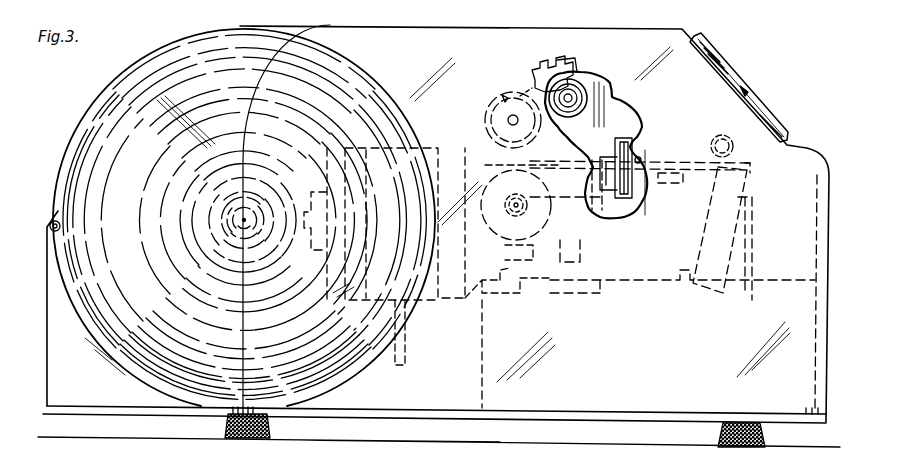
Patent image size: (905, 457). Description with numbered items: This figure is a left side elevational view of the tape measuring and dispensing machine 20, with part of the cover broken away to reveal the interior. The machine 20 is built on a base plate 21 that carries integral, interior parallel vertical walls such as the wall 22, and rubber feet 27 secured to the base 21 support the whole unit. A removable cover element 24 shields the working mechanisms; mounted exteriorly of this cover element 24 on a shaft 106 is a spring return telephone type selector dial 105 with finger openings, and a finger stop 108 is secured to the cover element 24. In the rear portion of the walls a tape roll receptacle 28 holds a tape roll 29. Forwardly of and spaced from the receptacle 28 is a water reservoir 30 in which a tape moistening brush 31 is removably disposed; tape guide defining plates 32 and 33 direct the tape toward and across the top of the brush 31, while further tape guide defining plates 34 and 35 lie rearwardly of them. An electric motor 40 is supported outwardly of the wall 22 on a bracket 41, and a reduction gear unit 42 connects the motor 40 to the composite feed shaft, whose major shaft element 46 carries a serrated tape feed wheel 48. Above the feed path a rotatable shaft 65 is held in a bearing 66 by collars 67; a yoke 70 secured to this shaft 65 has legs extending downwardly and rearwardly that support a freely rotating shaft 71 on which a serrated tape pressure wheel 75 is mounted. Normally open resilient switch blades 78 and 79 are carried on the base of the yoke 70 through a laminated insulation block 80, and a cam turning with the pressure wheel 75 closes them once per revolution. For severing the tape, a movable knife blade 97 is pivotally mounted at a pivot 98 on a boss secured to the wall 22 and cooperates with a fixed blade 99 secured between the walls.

The machine 20 is at (798, 82).
The base plate 21 is at (588, 412).
The interior parallel vertical wall 22 is at (202, 42).
The cover element 24 is at (343, 42).
The rubber feet 27 is at (222, 426).
The tape roll receptacle 28 is at (106, 131).
The tape roll 29 is at (116, 91).
The water reservoir 30 is at (750, 250).
The tape moistening brush 31 is at (745, 186).
The tape guide defining plate 32 is at (680, 150).
The tape guide defining plate 33 is at (709, 230).
The tape guide defining plate 34 is at (596, 145).
The tape guide defining plate 35 is at (590, 202).
The electric motor 40 is at (348, 150).
The bracket 41 is at (415, 330).
The reduction gear unit 42 is at (522, 300).
The major shaft element 46 is at (508, 218).
The tape feed wheel 48 is at (505, 245).
The rotatable shaft 65 is at (590, 80).
The bearing 66 is at (577, 96).
The collars 67 is at (585, 99).
The yoke 70 is at (498, 132).
The shaft 71 is at (508, 121).
The tape pressure wheel 75 is at (494, 104).
The resilient switch blade 78 is at (525, 86).
The resilient switch blade 79 is at (520, 94).
The laminated insulation block 80 is at (563, 64).
The knife blade 97 is at (624, 184).
The pivot 98 is at (641, 197).
The fixed blade 99 is at (610, 111).
The selector dial 105 is at (780, 122).
The shaft 106 is at (750, 90).
The finger stop 108 is at (706, 46).